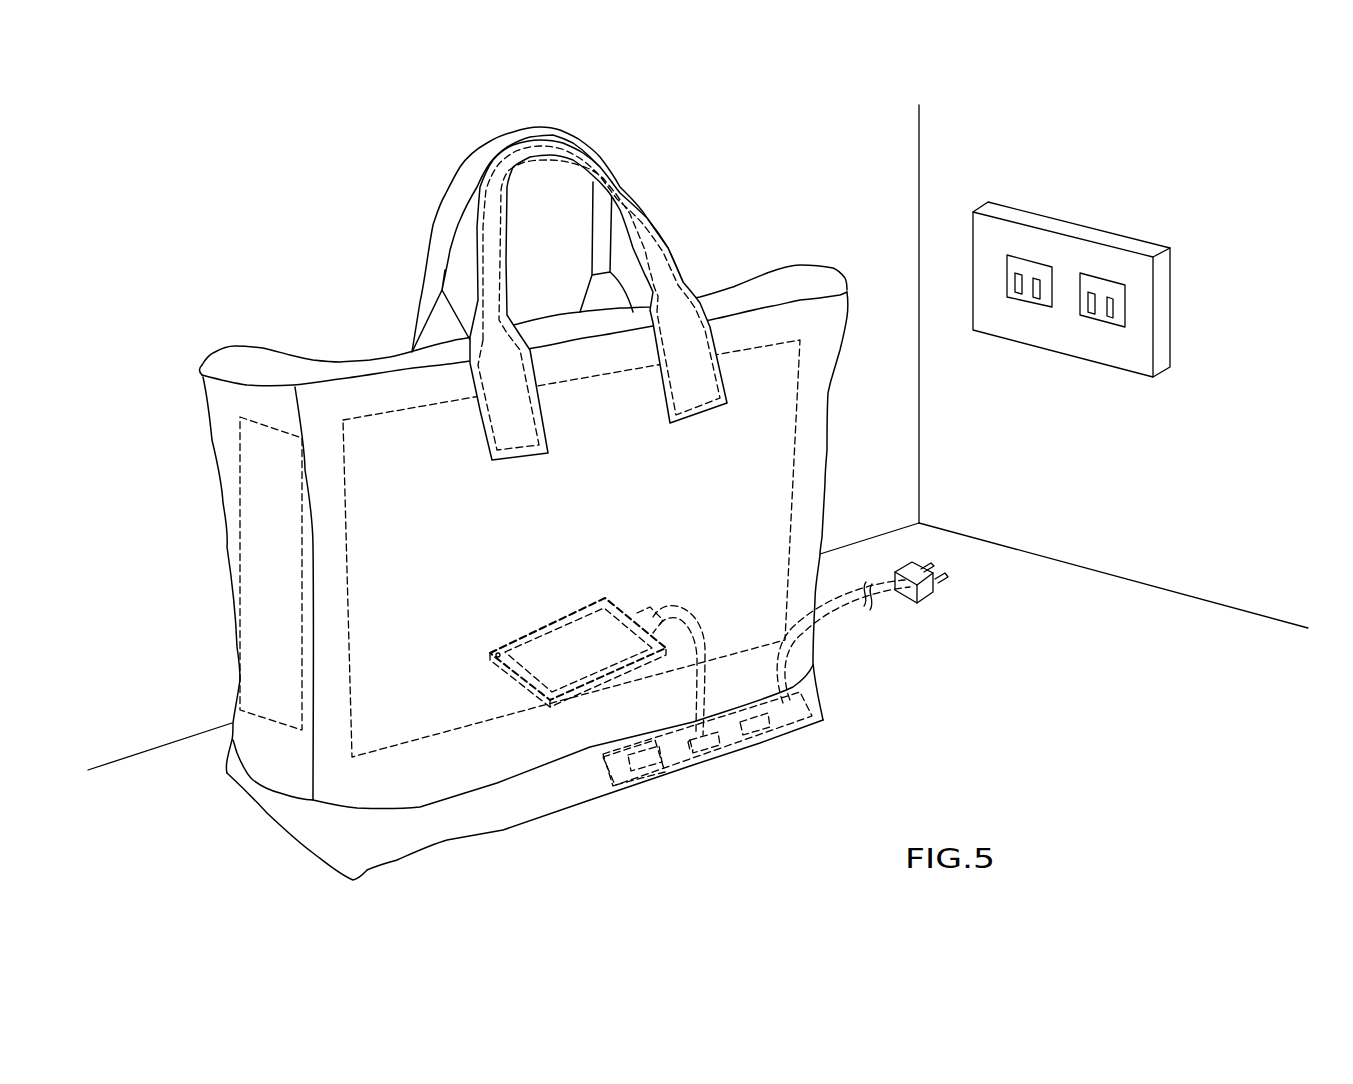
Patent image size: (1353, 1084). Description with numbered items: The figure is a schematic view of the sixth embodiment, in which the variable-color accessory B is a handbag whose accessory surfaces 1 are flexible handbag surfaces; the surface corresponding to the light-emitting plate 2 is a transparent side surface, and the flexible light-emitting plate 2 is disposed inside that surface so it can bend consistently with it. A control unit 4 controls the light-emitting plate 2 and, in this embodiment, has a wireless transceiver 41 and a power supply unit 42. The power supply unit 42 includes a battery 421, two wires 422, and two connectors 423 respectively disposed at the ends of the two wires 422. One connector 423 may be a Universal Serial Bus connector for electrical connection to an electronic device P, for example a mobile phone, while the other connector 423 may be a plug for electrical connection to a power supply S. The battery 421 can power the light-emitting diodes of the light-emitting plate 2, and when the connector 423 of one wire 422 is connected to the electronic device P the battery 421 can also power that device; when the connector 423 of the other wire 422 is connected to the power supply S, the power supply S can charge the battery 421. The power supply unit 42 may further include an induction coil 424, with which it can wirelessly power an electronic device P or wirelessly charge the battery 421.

The accessory surface 1 is at (330, 752).
The light-emitting plate 2 is at (465, 355).
The control unit 4 is at (804, 720).
The wireless transceiver 41 is at (825, 725).
The power supply unit 42 is at (804, 720).
The battery 421 is at (722, 750).
The wire 422 is at (740, 737).
The connector 423 is at (680, 680).
The induction coil 424 is at (643, 768).
The variable-color accessory B is at (524, 503).
The power supply S is at (1068, 228).
The electronic device P is at (572, 690).